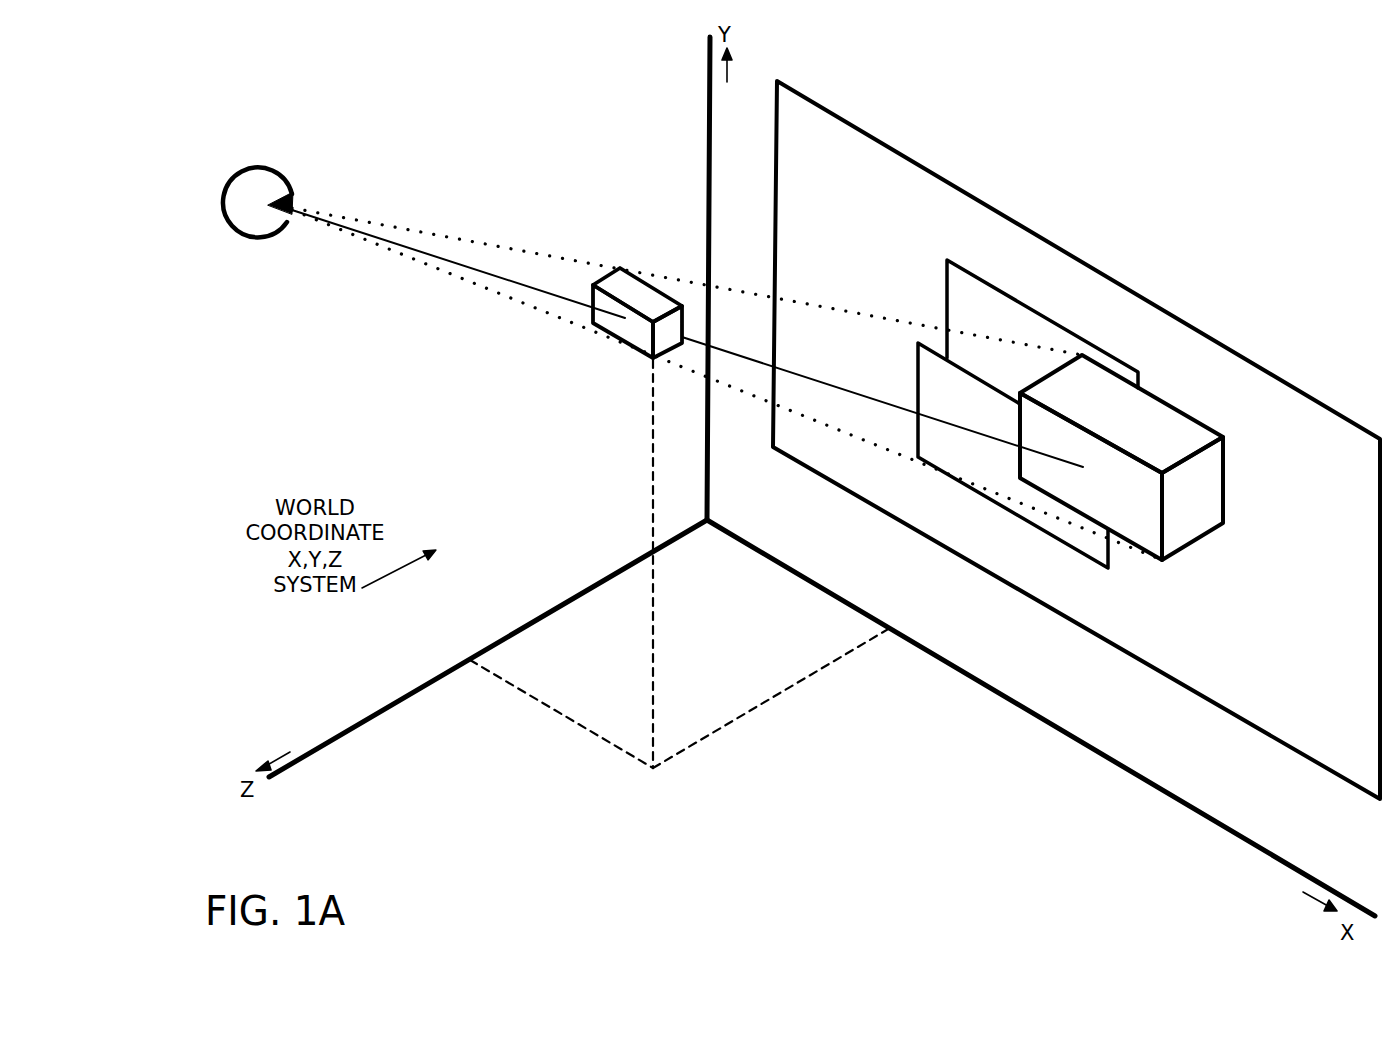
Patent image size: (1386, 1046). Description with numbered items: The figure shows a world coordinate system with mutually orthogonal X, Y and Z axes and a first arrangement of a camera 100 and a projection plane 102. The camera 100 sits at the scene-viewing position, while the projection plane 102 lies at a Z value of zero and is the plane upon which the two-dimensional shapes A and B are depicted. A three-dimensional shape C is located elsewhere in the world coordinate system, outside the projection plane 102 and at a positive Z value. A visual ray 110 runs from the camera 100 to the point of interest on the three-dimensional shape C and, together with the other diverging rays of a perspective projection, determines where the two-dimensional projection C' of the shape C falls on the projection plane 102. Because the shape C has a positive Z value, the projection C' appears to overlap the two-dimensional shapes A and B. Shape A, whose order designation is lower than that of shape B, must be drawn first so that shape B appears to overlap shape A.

The camera 100 is at (258, 163).
The projection plane 102 is at (1117, 280).
The visual ray 110 is at (363, 238).
The 2D shape A is at (969, 307).
The 2D shape B is at (1083, 545).
The 3D shape C is at (637, 287).
The 2D projection C' is at (1121, 419).